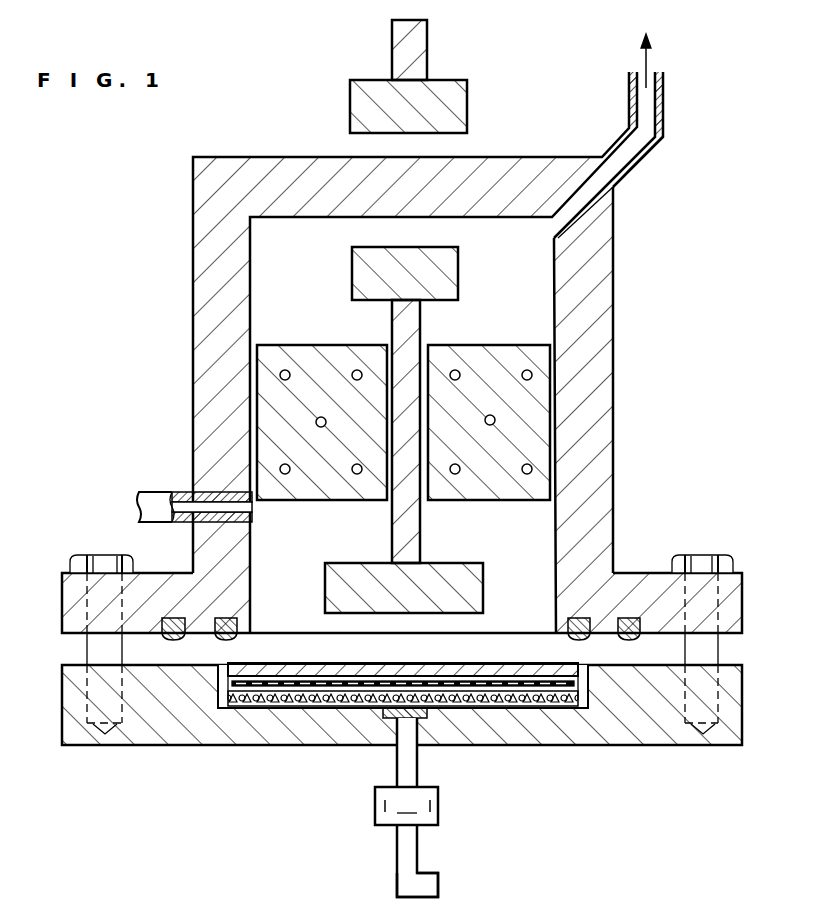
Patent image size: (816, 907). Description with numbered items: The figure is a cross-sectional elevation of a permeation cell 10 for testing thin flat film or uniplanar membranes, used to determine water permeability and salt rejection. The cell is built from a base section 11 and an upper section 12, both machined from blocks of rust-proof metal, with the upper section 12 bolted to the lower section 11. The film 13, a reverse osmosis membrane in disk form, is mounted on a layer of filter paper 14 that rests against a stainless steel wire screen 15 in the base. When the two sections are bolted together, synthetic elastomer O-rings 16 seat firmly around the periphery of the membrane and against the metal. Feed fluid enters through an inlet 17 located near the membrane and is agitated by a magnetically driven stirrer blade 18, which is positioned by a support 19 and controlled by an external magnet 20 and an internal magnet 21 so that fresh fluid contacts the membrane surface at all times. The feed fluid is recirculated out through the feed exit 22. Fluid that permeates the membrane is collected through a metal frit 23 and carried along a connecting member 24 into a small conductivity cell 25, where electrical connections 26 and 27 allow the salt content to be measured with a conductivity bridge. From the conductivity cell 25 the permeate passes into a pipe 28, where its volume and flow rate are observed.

The permeation cell 10 is at (193, 393).
The base section 11 is at (742, 697).
The upper section 12 is at (613, 371).
The film 13 is at (585, 670).
The layer of filter paper 14 is at (552, 692).
The stainless steel wire screen 15 is at (506, 700).
The O-rings 16 is at (225, 641).
The inlet 17 is at (133, 506).
The stirrer blade 18 is at (462, 567).
The support 19 is at (485, 345).
The external magnet 20 is at (460, 267).
The internal magnet 21 is at (467, 95).
The feed exit 22 is at (663, 92).
The metal frit 23 is at (428, 718).
The support rod 24 is at (397, 760).
The conductivity cell 25 is at (406, 806).
The electrical connection 26 is at (375, 806).
The electrical connection 27 is at (440, 808).
The pipe 28 is at (440, 884).